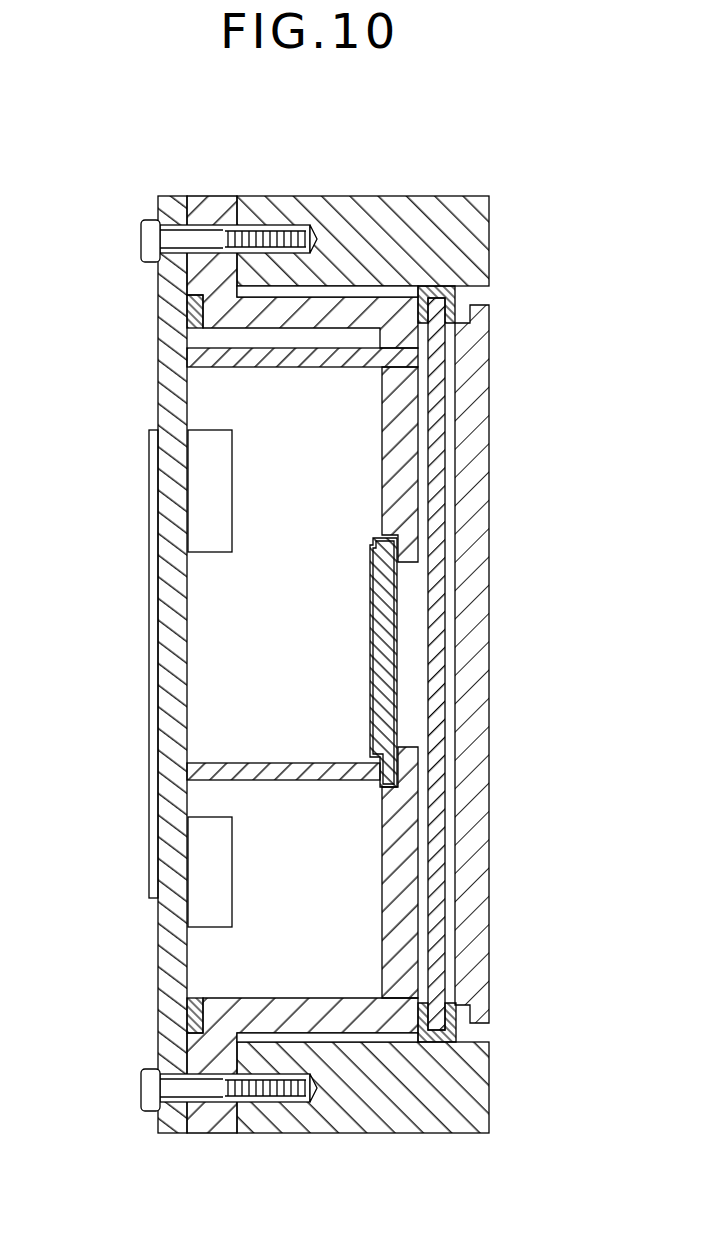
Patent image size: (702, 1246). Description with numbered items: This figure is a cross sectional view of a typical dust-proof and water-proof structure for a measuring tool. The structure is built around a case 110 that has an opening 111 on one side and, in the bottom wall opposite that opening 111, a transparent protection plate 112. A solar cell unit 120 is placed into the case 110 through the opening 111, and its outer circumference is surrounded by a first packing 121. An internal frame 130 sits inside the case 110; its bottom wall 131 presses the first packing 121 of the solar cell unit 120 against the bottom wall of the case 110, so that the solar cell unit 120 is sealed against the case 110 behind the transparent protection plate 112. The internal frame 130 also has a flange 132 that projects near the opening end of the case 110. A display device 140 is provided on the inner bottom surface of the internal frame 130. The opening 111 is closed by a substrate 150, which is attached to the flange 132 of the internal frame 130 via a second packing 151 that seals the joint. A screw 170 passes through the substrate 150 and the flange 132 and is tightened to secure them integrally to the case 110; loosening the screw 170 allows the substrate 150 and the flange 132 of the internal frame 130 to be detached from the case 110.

The case 110 is at (399, 196).
The opening 111 is at (200, 690).
The transparent protection plate 112 is at (480, 470).
The solar cell unit 120 is at (445, 548).
The first packing 121 is at (458, 288).
The internal frame 130 is at (343, 1023).
The bottom wall 131 is at (395, 432).
The flange 132 is at (216, 196).
The display device 140 is at (372, 650).
The substrate 150 is at (165, 402).
The second packing 151 is at (190, 318).
The screw 170 is at (141, 240).